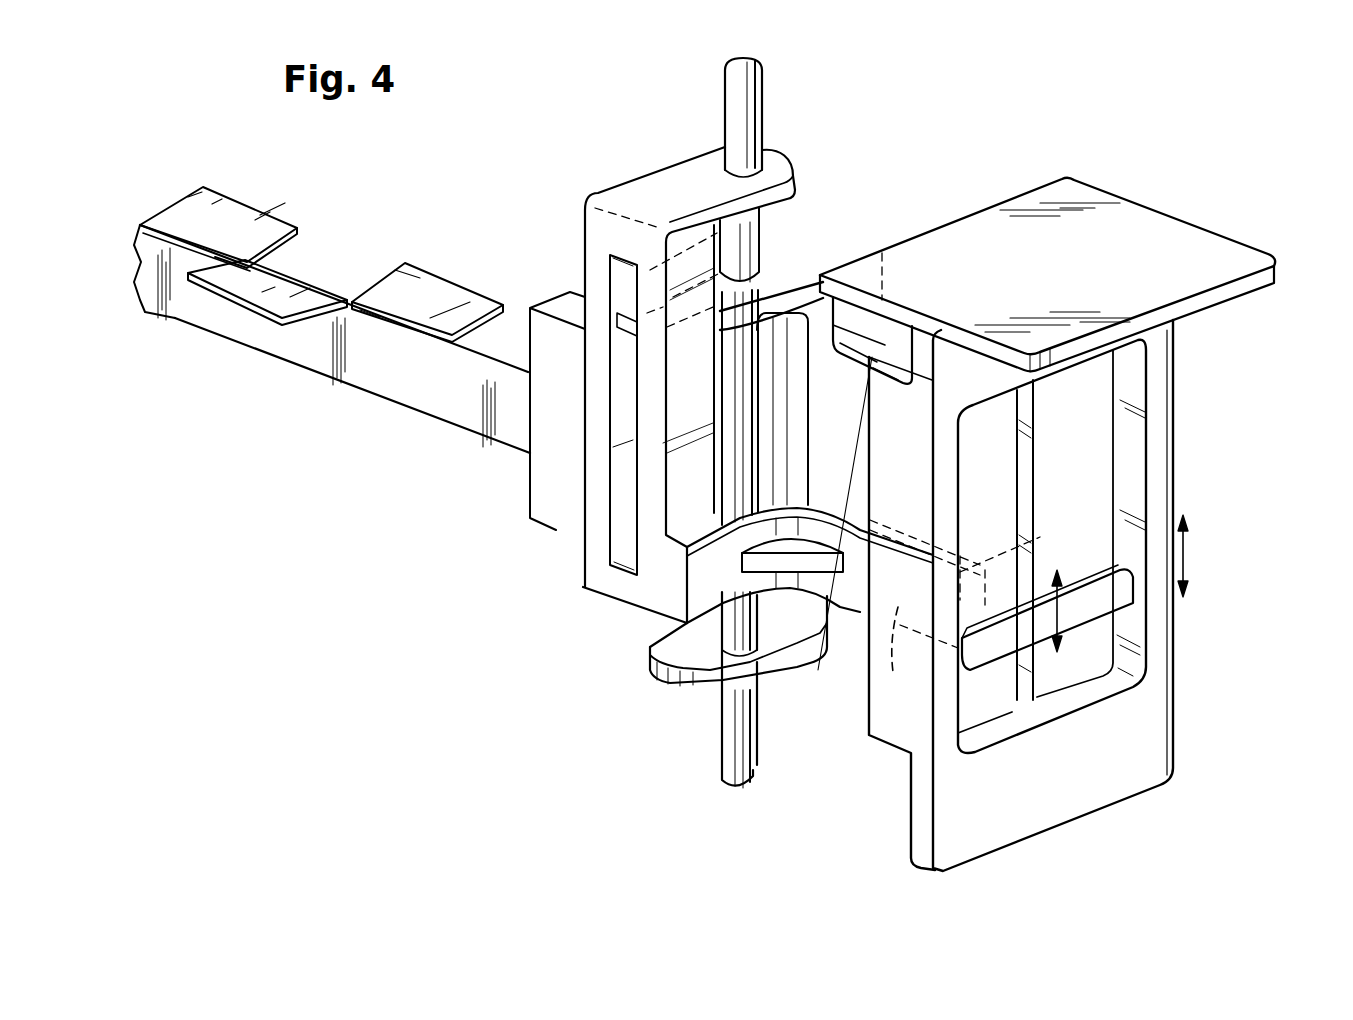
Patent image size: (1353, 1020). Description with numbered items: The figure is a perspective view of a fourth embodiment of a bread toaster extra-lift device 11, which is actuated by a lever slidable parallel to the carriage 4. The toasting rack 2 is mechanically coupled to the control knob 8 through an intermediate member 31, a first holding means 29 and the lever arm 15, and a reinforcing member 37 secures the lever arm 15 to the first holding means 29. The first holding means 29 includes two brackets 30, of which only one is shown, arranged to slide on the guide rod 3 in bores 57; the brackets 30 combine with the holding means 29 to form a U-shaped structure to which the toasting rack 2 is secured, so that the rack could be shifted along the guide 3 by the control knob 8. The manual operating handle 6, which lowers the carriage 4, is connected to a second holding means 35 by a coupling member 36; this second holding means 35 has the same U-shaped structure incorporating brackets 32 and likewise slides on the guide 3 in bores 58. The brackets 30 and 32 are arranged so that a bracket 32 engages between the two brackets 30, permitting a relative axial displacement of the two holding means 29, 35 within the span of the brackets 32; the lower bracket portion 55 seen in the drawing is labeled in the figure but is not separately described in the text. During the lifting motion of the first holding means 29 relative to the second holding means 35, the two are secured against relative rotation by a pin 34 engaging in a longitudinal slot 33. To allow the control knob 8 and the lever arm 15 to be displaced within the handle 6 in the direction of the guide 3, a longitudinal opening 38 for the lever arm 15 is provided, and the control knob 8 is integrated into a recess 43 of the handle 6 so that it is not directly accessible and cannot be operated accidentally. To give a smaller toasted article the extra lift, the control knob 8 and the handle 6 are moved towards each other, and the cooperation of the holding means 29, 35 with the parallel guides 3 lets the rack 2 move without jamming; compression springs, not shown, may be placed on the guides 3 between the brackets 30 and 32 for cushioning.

The toasting rack 2 is at (242, 332).
The guide rod 3 is at (733, 87).
The carriage 4 is at (1011, 509).
The manual operating handle 6 is at (1213, 253).
The control knob 8 is at (1107, 600).
The extra-lift device 11 is at (706, 441).
The lever arm 15 is at (892, 657).
The first holding means 29 is at (597, 258).
The bracket 30 is at (707, 168).
The intermediate member 31 is at (550, 468).
The bracket 32 is at (732, 296).
The longitudinal slot 33 is at (627, 517).
The pin 34 is at (627, 333).
The second holding means 35 is at (837, 243).
The coupling member 36 is at (883, 327).
The reinforcing member 37 is at (818, 670).
The longitudinal opening 38 is at (1027, 493).
The recess 43 is at (1123, 387).
The lower arm 55 is at (721, 611).
The bore 57 is at (760, 172).
The bore 58 is at (765, 268).